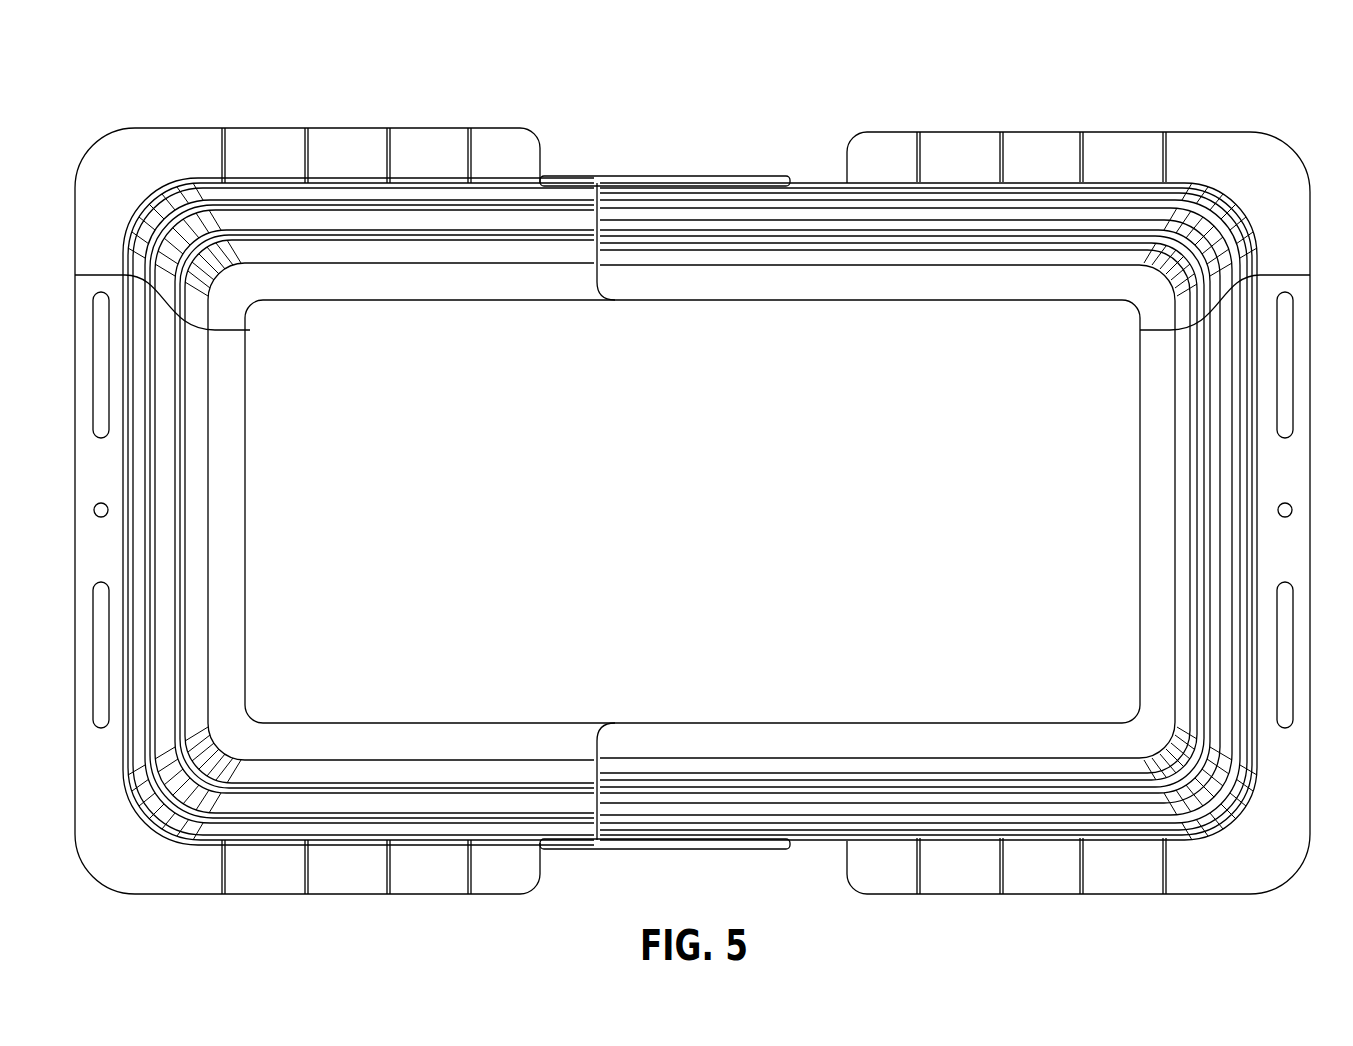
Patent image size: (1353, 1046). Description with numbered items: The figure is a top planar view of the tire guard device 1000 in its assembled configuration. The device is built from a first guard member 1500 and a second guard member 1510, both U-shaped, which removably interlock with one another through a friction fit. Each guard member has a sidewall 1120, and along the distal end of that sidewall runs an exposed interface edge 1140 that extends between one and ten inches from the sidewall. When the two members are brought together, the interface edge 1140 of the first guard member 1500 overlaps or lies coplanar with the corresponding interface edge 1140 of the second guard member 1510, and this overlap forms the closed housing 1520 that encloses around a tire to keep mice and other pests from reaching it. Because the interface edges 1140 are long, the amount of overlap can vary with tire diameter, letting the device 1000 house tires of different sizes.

The tire guard device 1000 is at (160, 93).
The sidewall 1120 is at (1193, 775).
The interface edge 1140 is at (733, 176).
The first guard member 1500 is at (250, 330).
The second guard member 1510 is at (1140, 331).
The housing 1520 is at (1288, 124).